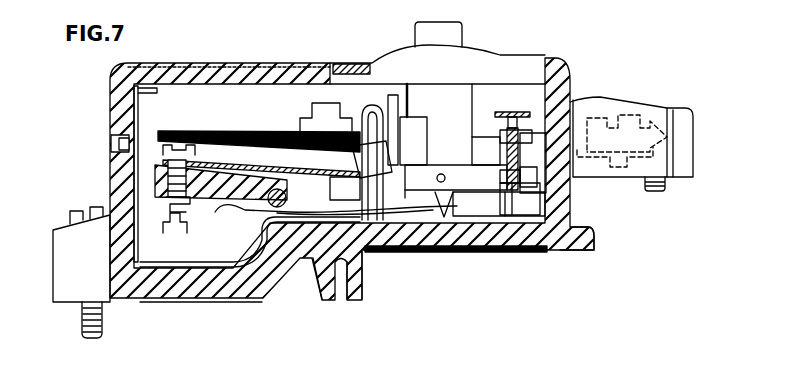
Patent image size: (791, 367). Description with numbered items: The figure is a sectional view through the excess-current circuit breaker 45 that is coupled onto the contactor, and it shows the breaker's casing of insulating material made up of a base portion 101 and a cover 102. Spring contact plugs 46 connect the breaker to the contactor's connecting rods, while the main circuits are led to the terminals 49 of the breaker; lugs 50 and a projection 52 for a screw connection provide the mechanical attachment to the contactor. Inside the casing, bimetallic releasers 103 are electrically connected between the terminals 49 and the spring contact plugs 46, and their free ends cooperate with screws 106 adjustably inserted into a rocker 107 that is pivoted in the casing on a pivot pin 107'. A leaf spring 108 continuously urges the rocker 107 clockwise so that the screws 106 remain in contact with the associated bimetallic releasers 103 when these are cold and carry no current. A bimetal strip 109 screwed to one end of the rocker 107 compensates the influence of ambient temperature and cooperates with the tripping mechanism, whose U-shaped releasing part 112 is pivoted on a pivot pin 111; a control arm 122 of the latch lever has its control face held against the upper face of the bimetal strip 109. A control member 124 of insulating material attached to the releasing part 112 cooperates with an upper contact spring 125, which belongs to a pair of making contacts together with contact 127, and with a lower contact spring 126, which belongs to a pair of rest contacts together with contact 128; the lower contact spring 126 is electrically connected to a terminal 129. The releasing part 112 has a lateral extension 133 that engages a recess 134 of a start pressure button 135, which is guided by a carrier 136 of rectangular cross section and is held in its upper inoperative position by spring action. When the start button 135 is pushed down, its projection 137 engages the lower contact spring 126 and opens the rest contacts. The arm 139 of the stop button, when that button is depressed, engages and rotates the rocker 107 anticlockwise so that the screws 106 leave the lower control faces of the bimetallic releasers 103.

The excess-current circuit breaker 45 is at (578, 63).
The spring contact plugs 46 is at (351, 266).
The terminals 49 is at (652, 123).
The lugs 50 is at (593, 239).
The projection 52 is at (68, 293).
The base portion 101 is at (260, 289).
The cover 102 is at (259, 69).
The bimetallic releasers 103 is at (200, 131).
The screws 106 is at (171, 229).
The rocker 107 is at (257, 194).
The pivot pin 107' is at (297, 194).
The leaf spring 108 is at (248, 215).
The bimetal strip 109 is at (343, 194).
The pivot pin 111 is at (441, 174).
The releasing part 112 is at (460, 191).
The control arm 122 is at (377, 151).
The control member 124 is at (471, 178).
The upper contact spring 125 is at (504, 114).
The lower contact spring 126 is at (515, 252).
The making contact 127 is at (530, 128).
The rest contact 128 is at (545, 198).
The terminal 129 is at (62, 223).
The lateral extension 133 is at (415, 189).
The recess 134 is at (409, 150).
The start pressure button 135 is at (454, 92).
The carrier 136 is at (455, 218).
The projection 137 is at (487, 137).
The arm 139 is at (268, 124).